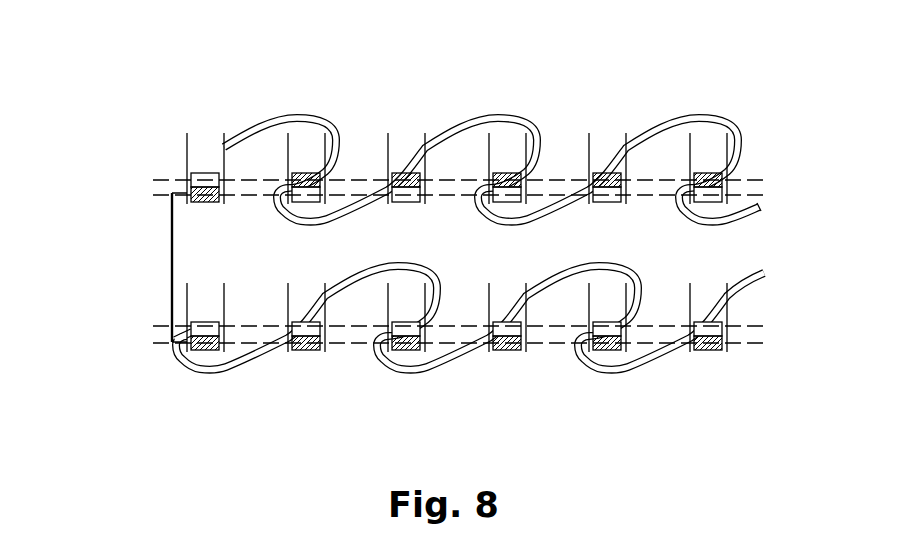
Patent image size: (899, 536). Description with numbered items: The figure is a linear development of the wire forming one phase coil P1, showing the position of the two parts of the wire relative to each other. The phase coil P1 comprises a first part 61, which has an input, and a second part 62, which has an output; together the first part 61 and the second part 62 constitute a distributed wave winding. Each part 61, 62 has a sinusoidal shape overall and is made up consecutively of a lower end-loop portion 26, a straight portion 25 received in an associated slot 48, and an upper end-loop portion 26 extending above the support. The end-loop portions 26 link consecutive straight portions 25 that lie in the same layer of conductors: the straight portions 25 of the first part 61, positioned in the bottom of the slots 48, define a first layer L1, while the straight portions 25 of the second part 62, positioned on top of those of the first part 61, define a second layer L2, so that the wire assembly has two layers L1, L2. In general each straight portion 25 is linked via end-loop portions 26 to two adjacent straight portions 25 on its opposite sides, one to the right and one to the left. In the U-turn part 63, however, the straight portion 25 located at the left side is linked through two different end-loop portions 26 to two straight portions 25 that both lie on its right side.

The straight portion 25 is at (399, 173).
The end-loop portion 26 is at (279, 121).
The slot 48 is at (204, 125).
The first part 61 is at (705, 384).
The second part 62 is at (740, 92).
The U-turn part 63 is at (140, 271).
The phase coil P1 is at (143, 77).
The first layer L1 is at (441, 266).
The second layer L2 is at (441, 248).